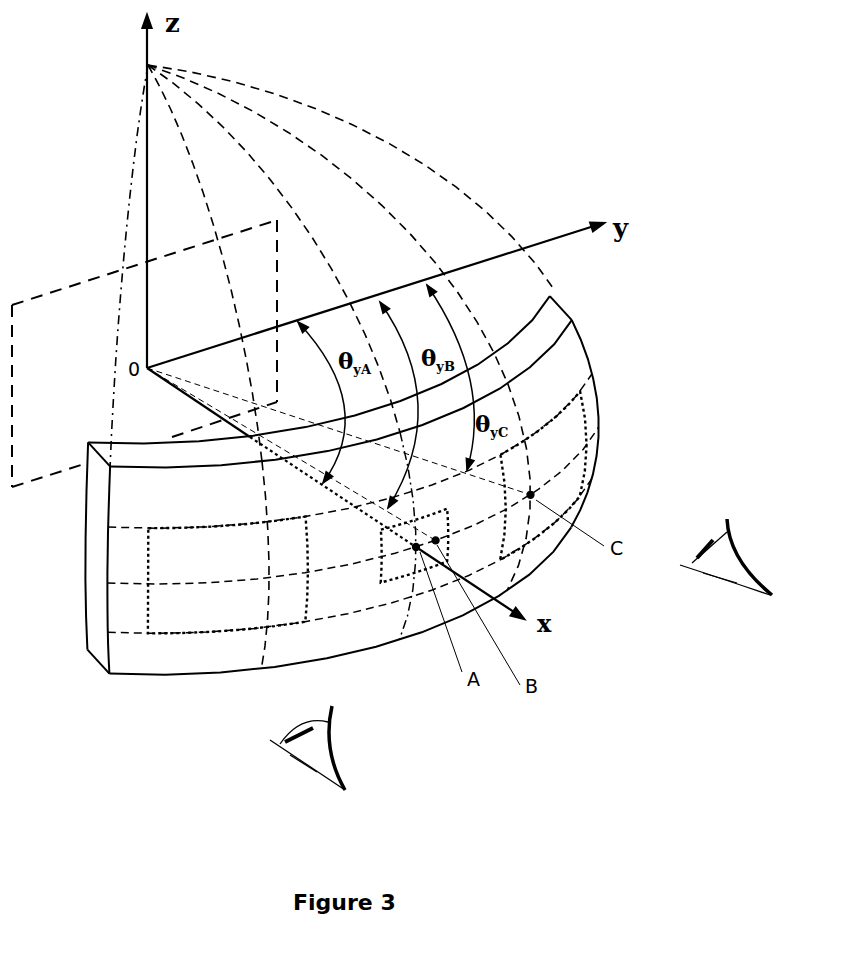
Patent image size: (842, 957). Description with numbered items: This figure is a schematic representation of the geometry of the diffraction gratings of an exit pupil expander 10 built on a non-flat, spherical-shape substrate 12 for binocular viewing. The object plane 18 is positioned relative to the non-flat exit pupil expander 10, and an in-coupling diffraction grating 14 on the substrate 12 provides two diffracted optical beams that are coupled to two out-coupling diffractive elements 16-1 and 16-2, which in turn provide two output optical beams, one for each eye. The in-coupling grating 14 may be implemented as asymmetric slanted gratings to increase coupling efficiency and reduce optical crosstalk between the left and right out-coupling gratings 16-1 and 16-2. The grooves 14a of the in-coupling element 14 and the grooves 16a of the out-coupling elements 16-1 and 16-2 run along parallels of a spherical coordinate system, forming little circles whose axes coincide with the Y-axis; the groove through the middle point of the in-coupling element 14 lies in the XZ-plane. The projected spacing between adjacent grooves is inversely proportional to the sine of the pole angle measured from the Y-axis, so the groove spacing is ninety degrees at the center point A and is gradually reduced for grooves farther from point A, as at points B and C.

The exit pupil expander 10 is at (448, 140).
The non-flat substrate 12 is at (132, 495).
The in-coupling diffraction grating 14 is at (405, 563).
The grooves of the in-coupling diffractive element 14a is at (413, 553).
The out-coupling diffractive element 16-1 is at (166, 607).
The out-coupling diffractive element 16-2 is at (548, 462).
The grooves of the out-coupling diffractive elements 16a is at (267, 600).
The object plane 18 is at (63, 333).